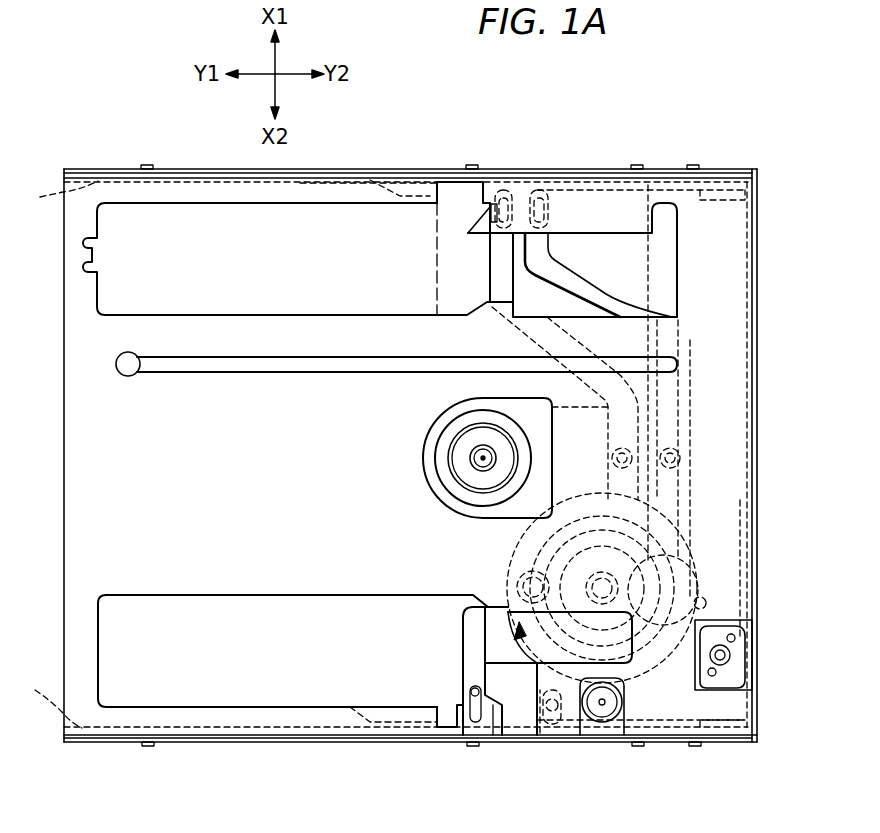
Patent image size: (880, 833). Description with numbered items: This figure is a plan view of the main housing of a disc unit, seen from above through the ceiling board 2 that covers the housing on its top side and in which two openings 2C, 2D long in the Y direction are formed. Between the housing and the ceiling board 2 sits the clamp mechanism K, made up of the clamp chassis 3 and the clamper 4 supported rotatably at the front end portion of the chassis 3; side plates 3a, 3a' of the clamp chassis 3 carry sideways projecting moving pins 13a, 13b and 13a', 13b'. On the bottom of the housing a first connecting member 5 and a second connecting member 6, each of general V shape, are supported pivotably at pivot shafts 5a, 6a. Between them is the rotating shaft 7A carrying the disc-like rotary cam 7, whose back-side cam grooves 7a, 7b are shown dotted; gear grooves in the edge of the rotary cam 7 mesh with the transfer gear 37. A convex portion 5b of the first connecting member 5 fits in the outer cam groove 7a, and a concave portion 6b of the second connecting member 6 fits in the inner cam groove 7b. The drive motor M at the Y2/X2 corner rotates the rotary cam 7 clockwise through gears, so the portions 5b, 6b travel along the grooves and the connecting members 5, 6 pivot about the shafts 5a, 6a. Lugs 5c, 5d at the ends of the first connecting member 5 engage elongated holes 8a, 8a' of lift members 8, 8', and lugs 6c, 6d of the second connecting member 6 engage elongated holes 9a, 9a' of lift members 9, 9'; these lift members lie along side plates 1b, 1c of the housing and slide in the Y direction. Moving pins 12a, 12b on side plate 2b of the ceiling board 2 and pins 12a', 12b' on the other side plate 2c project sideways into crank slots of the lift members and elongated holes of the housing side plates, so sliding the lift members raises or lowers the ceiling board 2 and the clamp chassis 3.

The side plate 1b is at (90, 742).
The side plate 1c is at (96, 169).
The ceiling board 2 is at (68, 335).
The side plate 2b is at (45, 697).
The side plate 2c is at (53, 194).
The opening 2C is at (243, 315).
The opening 2D is at (243, 595).
The clamp chassis 3 is at (523, 413).
The side plate 3a is at (759, 721).
The side plate 3a' is at (761, 199).
The clamper 4 is at (432, 470).
The first connecting member 5 is at (464, 628).
The pivot shaft 5a is at (612, 455).
The convex portion 5b is at (500, 590).
The lug 5c is at (470, 696).
The lug 5d is at (500, 205).
The second connecting member 6 is at (598, 278).
The pivot shaft 6a is at (680, 455).
The concave portion 6b is at (750, 608).
The lug 6c is at (540, 735).
The lug 6d is at (570, 183).
The rotary cam 7 is at (510, 570).
The cam groove 7a is at (523, 545).
The cam groove 7b is at (697, 542).
The rotating shaft 7A is at (740, 558).
The lift member 8 is at (368, 749).
The lift member 8' is at (368, 156).
The elongated hole 8a is at (476, 755).
The elongated hole 8a' is at (516, 173).
The lift member 9 is at (599, 746).
The lift member 9' is at (627, 337).
The elongated hole 9a is at (557, 736).
The elongated hole 9a' is at (556, 169).
The moving pin 12a is at (173, 768).
The moving pin 12a' is at (165, 140).
The moving pin 12b is at (445, 767).
The moving pin 12b' is at (465, 139).
The moving pin 13a is at (662, 771).
The moving pin 13a' is at (665, 138).
The moving pin 13b is at (725, 769).
The moving pin 13b' is at (722, 142).
The transfer gear 37 is at (608, 716).
The clamp mechanism K is at (418, 442).
The drive motor M is at (738, 668).